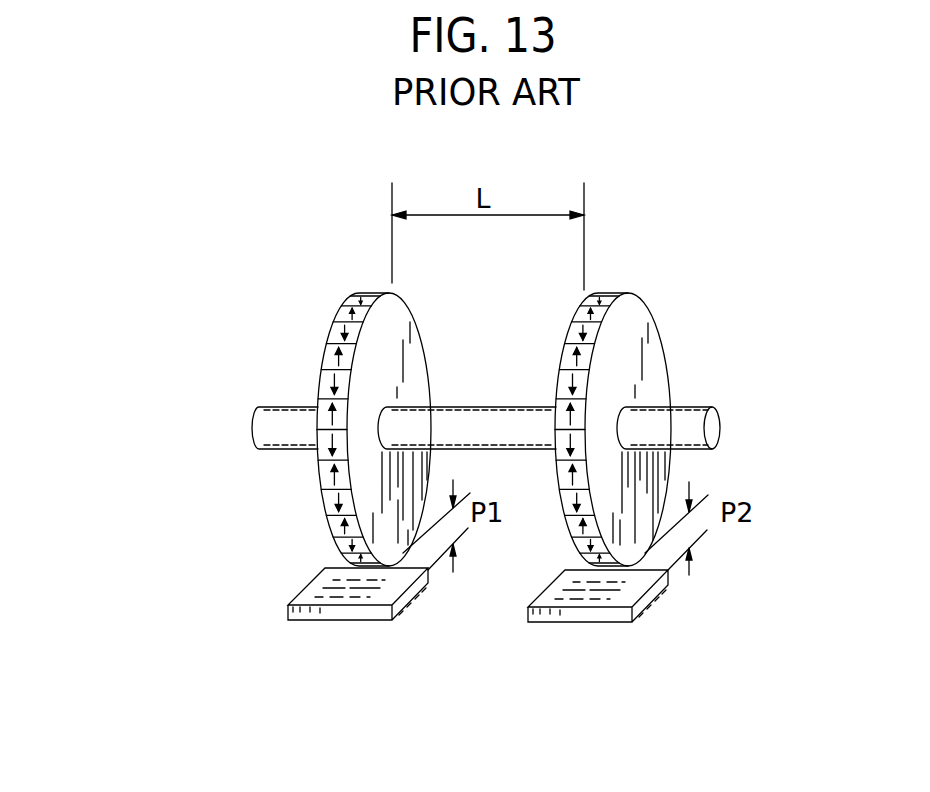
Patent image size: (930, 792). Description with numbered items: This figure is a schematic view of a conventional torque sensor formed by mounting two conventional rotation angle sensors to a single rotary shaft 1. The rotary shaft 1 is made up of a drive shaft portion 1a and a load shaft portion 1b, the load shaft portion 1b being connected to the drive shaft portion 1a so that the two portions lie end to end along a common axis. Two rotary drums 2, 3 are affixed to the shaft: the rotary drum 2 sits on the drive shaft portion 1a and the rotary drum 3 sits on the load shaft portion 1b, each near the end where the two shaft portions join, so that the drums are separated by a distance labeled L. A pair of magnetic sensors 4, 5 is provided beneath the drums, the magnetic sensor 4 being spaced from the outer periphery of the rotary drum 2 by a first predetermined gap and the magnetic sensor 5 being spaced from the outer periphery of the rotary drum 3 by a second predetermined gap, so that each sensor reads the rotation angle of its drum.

The rotary shaft 1 is at (493, 378).
The drive shaft portion 1a is at (252, 424).
The load shaft portion 1b is at (712, 423).
The rotary drum 2 is at (412, 367).
The rotary drum 3 is at (655, 370).
The magnetic sensor 4 is at (347, 612).
The magnetic sensor 5 is at (591, 614).